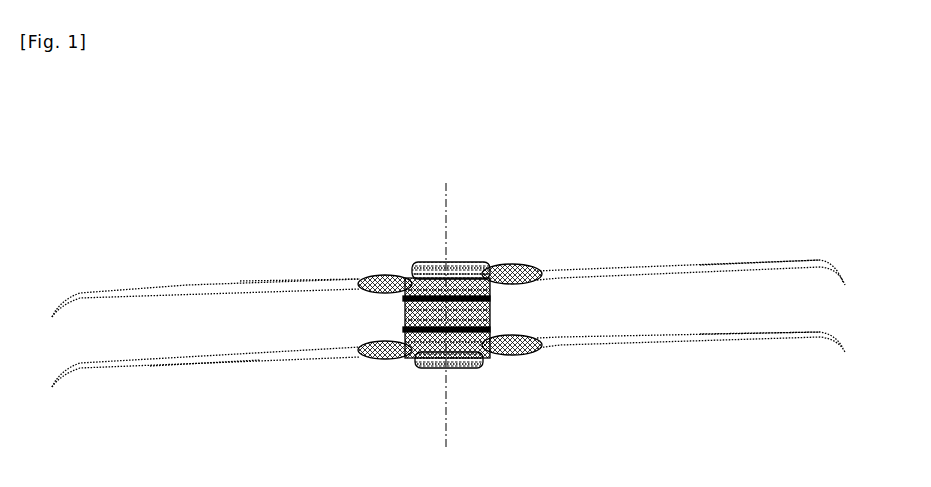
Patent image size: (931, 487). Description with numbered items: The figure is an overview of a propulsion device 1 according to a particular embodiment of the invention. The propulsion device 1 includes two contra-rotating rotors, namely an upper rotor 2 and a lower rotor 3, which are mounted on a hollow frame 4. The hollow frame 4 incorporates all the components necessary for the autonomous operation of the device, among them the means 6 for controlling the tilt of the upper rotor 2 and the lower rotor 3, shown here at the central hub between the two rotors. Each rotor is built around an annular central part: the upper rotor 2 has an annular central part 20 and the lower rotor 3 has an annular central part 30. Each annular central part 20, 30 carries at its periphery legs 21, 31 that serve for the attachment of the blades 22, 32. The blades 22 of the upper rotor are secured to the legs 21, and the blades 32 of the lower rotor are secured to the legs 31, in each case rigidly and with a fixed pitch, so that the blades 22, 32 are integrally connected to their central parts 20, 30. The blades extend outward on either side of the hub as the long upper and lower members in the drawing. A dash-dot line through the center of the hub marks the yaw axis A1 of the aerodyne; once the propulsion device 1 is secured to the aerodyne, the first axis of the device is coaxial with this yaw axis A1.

The propulsion device 1 is at (457, 288).
The upper rotor 2 is at (186, 274).
The lower rotor 3 is at (660, 349).
The hollow frame 4 is at (440, 221).
The means for controlling the tilt of the rotors 6 is at (499, 315).
The annular central part 20 is at (490, 270).
The legs 21 is at (362, 270).
The blades 22 is at (242, 284).
The annular central part 30 is at (400, 365).
The legs 31 is at (365, 365).
The blades 32 is at (155, 362).
The yaw axis A1 is at (462, 321).